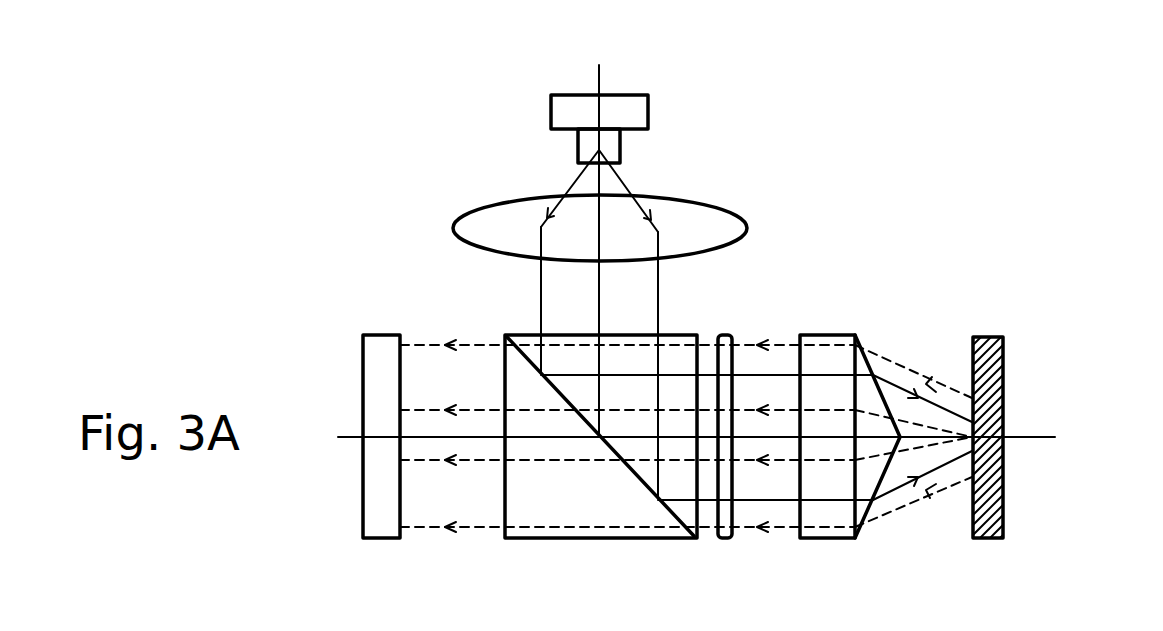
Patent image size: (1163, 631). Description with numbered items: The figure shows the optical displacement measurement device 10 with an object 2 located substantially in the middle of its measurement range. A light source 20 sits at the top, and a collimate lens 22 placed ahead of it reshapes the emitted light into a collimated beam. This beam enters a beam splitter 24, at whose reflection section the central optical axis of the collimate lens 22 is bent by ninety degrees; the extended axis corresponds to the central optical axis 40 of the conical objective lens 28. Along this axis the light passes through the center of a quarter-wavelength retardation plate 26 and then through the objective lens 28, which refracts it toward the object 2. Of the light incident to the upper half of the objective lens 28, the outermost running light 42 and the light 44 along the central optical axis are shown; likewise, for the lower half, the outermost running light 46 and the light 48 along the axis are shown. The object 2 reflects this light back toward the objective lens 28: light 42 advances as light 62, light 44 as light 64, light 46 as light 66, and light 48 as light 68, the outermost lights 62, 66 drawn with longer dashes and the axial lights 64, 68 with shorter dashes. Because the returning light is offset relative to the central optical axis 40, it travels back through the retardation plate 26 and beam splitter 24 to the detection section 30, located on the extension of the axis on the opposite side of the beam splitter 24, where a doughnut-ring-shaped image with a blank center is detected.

The object 2 is at (990, 538).
The optical displacement measurement device 10 is at (353, 178).
The light source 20 is at (648, 112).
The collimate lens 22 is at (703, 218).
The beam splitter 24 is at (640, 515).
The quarter-wavelength retardation plate 26 is at (727, 538).
The objective lens 28 is at (823, 538).
The detection section 30 is at (380, 531).
The central optical axis 40 is at (1040, 436).
The outermost running light 42 is at (901, 385).
The light passing along the central optical axis 44 is at (963, 481).
The outermost running light 46 is at (906, 488).
The light passing along the central optical axis 48 is at (962, 400).
The light 62 is at (435, 461).
The light 64 is at (481, 530).
The light 66 is at (436, 406).
The light 68 is at (469, 345).